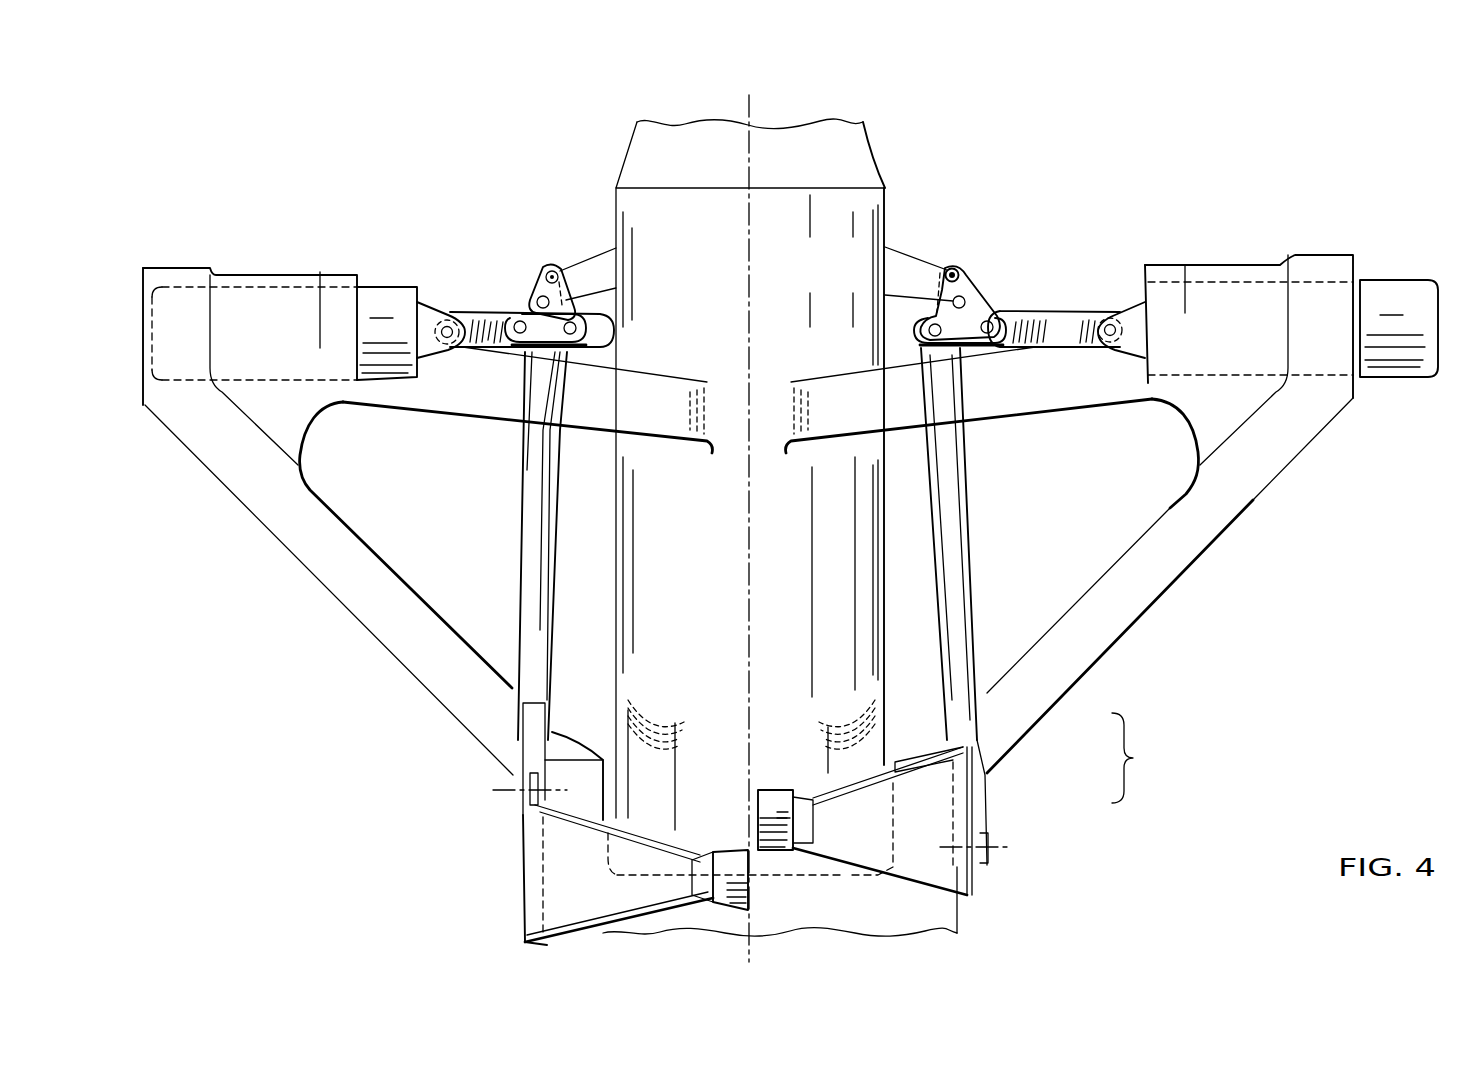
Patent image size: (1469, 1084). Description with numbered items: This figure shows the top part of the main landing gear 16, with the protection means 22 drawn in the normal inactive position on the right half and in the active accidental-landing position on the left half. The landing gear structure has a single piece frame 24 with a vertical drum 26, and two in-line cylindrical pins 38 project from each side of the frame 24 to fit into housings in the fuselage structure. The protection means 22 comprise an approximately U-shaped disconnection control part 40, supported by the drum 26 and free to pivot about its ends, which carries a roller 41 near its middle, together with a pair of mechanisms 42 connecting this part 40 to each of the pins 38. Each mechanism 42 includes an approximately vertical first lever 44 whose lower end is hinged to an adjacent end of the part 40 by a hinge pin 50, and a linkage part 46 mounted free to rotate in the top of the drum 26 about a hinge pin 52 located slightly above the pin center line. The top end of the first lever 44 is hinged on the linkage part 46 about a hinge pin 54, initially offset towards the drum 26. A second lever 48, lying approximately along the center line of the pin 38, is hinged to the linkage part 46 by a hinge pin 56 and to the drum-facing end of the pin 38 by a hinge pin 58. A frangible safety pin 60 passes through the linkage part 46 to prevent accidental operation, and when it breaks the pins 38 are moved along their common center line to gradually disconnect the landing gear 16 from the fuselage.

The main landing gear 16 is at (598, 156).
The protection means 22 is at (1145, 758).
The single piece frame 24 is at (312, 545).
The vertical drum 26 is at (852, 198).
The cylindrical pins 38 is at (393, 310).
The disconnection control part 40 is at (925, 743).
The roller 41 is at (770, 823).
The mechanisms 42 is at (975, 648).
The first lever 44 is at (530, 537).
The linkage part 46 is at (543, 272).
The second lever 48 is at (490, 338).
The hinge pin 50 is at (510, 790).
The hinge pin 52 is at (567, 300).
The hinge pin 54 is at (928, 335).
The hinge pin 56 is at (586, 338).
The hinge pin 58 is at (455, 355).
The safety pin 60 is at (952, 268).